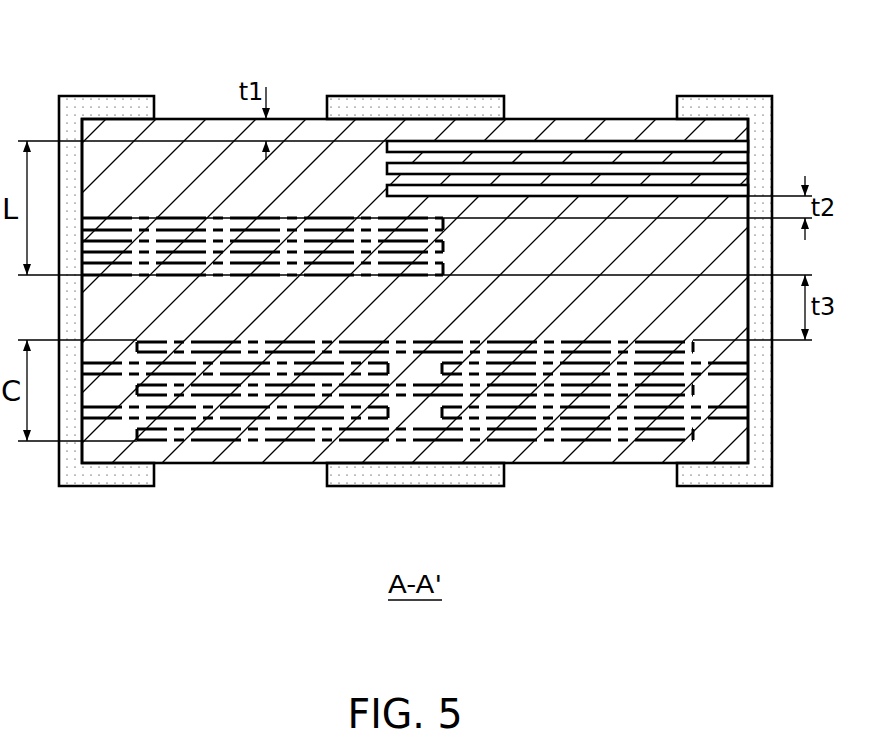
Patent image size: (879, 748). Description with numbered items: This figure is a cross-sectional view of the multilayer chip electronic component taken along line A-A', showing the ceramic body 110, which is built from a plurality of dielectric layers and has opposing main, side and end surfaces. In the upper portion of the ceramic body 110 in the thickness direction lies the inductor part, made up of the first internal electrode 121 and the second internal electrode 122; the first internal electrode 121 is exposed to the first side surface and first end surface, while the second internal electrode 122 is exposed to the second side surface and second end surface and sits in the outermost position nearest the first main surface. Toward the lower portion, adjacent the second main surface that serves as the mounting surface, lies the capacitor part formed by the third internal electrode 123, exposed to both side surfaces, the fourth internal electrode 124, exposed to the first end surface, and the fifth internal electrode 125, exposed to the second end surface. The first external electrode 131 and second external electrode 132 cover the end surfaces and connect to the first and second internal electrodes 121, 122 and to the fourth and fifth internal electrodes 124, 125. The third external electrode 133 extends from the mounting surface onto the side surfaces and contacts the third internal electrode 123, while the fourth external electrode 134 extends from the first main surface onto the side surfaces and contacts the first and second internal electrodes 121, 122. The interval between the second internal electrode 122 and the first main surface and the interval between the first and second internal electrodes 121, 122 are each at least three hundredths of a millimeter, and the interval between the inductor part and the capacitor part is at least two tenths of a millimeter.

The ceramic body 110 is at (542, 112).
The first internal electrode 121 is at (192, 222).
The second internal electrode 122 is at (620, 147).
The third internal electrode 123 is at (201, 437).
The fourth internal electrode 124 is at (277, 413).
The fifth internal electrode 125 is at (637, 413).
The first external electrode 131 is at (105, 473).
The second external electrode 132 is at (730, 473).
The third external electrode 133 is at (417, 475).
The fourth external electrode 134 is at (417, 112).